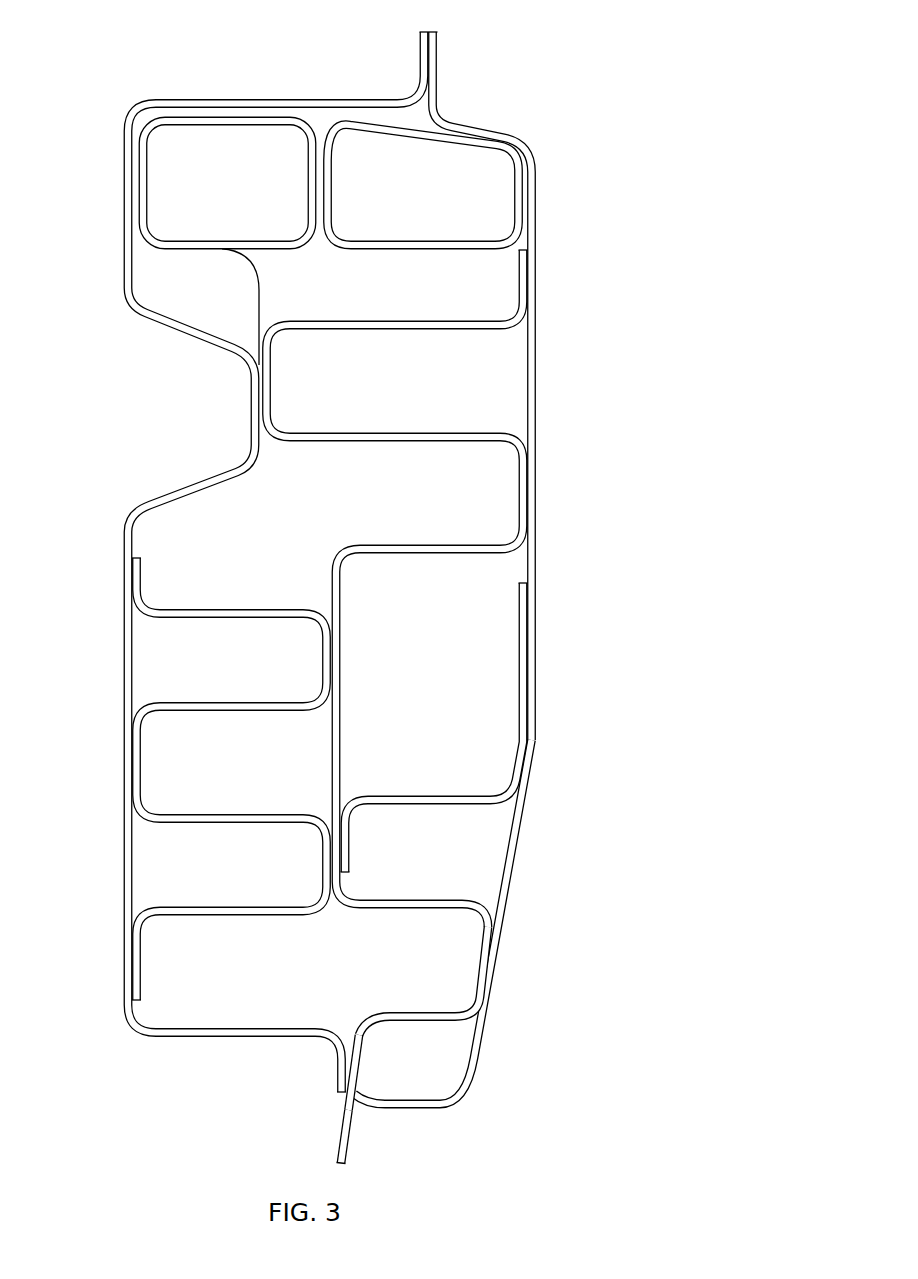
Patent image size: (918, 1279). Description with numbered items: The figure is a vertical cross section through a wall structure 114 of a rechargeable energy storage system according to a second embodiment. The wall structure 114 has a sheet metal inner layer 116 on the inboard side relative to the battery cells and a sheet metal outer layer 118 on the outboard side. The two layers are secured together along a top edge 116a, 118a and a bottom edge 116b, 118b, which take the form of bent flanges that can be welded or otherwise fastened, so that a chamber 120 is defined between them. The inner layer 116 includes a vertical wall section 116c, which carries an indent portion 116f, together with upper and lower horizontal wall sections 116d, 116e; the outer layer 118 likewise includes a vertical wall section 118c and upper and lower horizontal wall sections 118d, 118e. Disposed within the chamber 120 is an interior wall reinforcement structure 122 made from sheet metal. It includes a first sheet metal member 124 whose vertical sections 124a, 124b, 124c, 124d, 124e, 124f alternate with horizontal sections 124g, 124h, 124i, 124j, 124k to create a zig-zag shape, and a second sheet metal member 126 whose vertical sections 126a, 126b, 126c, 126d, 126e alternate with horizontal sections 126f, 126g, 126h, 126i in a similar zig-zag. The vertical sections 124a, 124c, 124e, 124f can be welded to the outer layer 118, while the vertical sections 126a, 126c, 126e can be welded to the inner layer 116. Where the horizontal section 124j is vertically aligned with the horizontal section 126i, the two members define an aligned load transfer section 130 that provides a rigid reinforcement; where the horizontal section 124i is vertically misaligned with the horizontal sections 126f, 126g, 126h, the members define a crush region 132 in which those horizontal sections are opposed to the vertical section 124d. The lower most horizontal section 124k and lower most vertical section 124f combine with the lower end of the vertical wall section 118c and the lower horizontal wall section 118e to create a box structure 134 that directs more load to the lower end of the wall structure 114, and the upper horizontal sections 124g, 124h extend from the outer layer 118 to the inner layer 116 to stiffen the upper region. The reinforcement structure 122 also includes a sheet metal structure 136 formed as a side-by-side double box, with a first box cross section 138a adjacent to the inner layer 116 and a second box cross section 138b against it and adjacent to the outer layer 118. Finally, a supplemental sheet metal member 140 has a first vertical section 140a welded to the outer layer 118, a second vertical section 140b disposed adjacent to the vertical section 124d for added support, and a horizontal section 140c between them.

The wall structure 114 is at (522, 60).
The inner layer 116 is at (241, 565).
The top edge of inner layer 116a is at (421, 55).
The bottom edge of inner layer 116b is at (340, 1082).
The vertical wall section of inner layer 116c is at (125, 660).
The upper horizontal wall section of inner layer 116d is at (263, 100).
The lower horizontal wall section of inner layer 116e is at (240, 1036).
The indent portion 116f is at (205, 350).
The outer layer 118 is at (485, 592).
The top edge of outer layer 118a is at (437, 42).
The bottom edge of outer layer 118b is at (348, 1143).
The vertical wall section of outer layer 118c is at (535, 660).
The upper horizontal wall section of outer layer 118d is at (470, 125).
The lower horizontal wall section of outer layer 118e is at (423, 1106).
The chamber 120 is at (346, 504).
The interior wall reinforcement structure 122 is at (455, 410).
The first sheet metal member 124 is at (437, 680).
The vertical section of first sheet metal member 124a is at (518, 265).
The vertical section of first sheet metal member 124b is at (269, 390).
The vertical section of first sheet metal member 124c is at (520, 505).
The vertical section of first sheet metal member 124d is at (338, 735).
The vertical section of first sheet metal member 124e is at (483, 965).
The lower most vertical section of first sheet metal member 124f is at (360, 1050).
The upper horizontal section of first sheet metal member 124g is at (390, 325).
The upper horizontal section of first sheet metal member 124h is at (360, 433).
The horizontal section of first sheet metal member 124i is at (445, 553).
The horizontal section of first sheet metal member 124j is at (438, 903).
The lower most horizontal section of first sheet metal member 124k is at (427, 1017).
The second sheet metal member 126 is at (244, 763).
The vertical section of second sheet metal member 126a is at (140, 570).
The vertical section of second sheet metal member 126b is at (325, 655).
The vertical section of second sheet metal member 126c is at (140, 770).
The vertical section of second sheet metal member 126d is at (325, 870).
The vertical section of second sheet metal member 126e is at (140, 973).
The horizontal section of second sheet metal member 126f is at (275, 612).
The horizontal section of second sheet metal member 126g is at (237, 705).
The horizontal section of second sheet metal member 126h is at (228, 818).
The horizontal section of second sheet metal member 126i is at (243, 910).
The aligned load transfer section 130 is at (160, 847).
The crush region 132 is at (360, 580).
The box structure 134 is at (495, 1032).
The sheet metal structure 136 is at (400, 172).
The first box cross section 138a is at (145, 185).
The second box cross section 138b is at (516, 205).
The sheet metal member 140 is at (469, 727).
The first vertical section of sheet metal member 140a is at (520, 700).
The second vertical section of sheet metal member 140b is at (346, 845).
The horizontal section of sheet metal member 140c is at (405, 797).